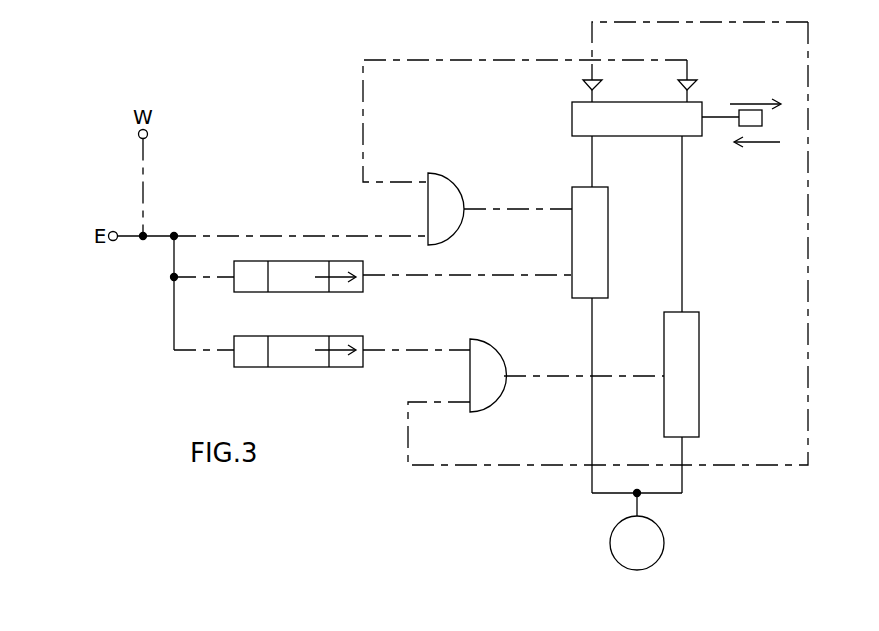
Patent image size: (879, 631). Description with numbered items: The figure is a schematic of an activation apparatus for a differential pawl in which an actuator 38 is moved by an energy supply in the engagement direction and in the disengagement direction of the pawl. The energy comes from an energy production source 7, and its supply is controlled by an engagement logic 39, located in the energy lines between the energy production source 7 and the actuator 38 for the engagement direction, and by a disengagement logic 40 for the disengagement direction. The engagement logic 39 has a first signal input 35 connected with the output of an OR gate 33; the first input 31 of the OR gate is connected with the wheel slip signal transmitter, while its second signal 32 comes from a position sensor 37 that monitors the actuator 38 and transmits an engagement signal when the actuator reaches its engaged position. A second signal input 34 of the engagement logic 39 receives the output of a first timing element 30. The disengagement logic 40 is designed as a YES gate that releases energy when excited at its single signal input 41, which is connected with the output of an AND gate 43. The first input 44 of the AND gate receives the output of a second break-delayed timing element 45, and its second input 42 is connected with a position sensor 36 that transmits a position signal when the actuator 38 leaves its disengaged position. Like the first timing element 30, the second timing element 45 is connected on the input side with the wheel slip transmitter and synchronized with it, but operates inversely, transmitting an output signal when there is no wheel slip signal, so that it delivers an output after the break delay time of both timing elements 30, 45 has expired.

The energy production source 7 is at (652, 541).
The first timing element 30 is at (286, 298).
The first input of OR gate 31 is at (426, 237).
The second signal of OR gate 32 is at (427, 179).
The OR gate 33 is at (450, 177).
The second signal input 34 is at (571, 276).
The first signal input 35 is at (571, 208).
The position sensor 36 is at (582, 90).
The position sensor 37 is at (703, 86).
The actuator 38 is at (722, 122).
The engagement logic 39 is at (612, 242).
The disengagement logic 40 is at (705, 376).
The signal input 41 is at (663, 378).
The second input of AND gate 42 is at (468, 404).
The AND gate 43 is at (498, 405).
The first input of AND gate 44 is at (468, 348).
The second timing element 45 is at (286, 374).